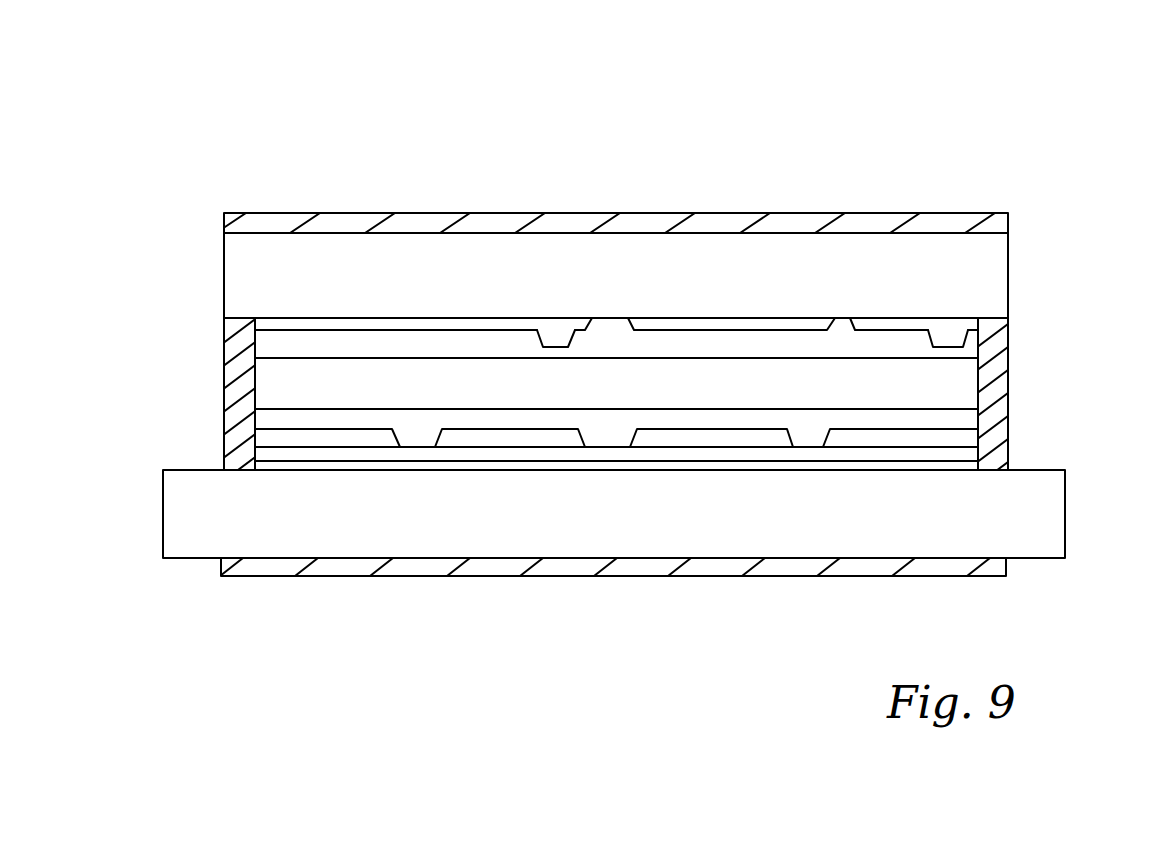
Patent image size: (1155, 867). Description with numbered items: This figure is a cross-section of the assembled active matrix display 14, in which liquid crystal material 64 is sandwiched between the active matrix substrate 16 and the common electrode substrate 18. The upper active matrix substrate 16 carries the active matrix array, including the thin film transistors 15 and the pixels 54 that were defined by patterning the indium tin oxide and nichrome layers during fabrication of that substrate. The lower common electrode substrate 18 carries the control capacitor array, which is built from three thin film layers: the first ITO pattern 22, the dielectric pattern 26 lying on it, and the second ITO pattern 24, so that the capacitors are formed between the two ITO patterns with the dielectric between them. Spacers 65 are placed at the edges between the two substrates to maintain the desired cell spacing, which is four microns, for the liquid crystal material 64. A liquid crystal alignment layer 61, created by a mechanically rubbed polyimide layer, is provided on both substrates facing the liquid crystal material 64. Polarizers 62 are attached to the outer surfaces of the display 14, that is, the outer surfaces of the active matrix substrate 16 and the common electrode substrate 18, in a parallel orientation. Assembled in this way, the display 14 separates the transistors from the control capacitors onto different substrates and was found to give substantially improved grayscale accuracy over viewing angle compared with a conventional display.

The active matrix display 14 is at (824, 84).
The polarizers 62 is at (612, 393).
The active matrix substrate 16 is at (566, 275).
The spacers 65 is at (622, 401).
The liquid crystal alignment layer 61 is at (618, 352).
The thin film transistors 15 is at (749, 302).
The pixels 54 is at (848, 295).
The liquid crystal material 64 is at (618, 395).
The second ITO pattern 24 is at (616, 476).
The dielectric pattern 26 is at (616, 485).
The first ITO pattern 22 is at (616, 492).
The common electrode substrate 18 is at (560, 514).